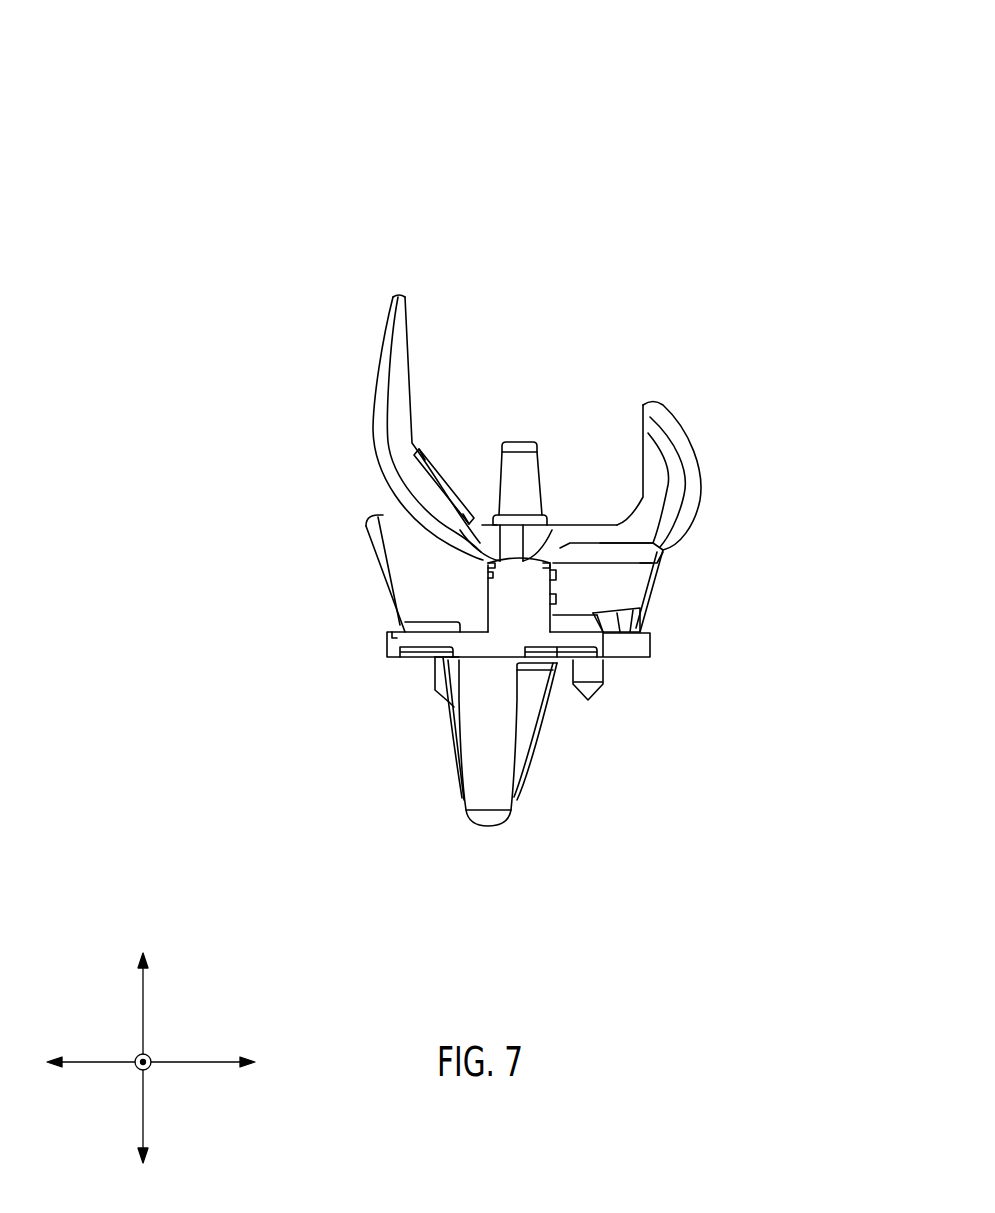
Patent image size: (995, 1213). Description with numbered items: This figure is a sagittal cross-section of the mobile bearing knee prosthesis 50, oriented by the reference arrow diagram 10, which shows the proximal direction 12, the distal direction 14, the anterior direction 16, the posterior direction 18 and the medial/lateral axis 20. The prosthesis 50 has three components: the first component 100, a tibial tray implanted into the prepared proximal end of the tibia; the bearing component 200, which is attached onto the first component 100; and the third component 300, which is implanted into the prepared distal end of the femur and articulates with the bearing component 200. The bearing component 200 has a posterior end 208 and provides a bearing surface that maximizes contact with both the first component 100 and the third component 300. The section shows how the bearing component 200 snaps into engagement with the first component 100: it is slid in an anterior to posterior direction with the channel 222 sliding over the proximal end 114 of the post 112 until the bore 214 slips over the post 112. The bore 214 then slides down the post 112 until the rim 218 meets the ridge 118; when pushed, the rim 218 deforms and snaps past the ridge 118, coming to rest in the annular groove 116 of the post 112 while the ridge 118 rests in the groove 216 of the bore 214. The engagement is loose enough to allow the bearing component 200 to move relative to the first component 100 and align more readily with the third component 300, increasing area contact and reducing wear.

The mobile bearing knee prosthesis 50 is at (502, 188).
The first component 100 is at (398, 745).
The post 112 is at (502, 608).
The proximal end of the post 114 is at (530, 561).
The annular groove 116 is at (488, 577).
The ridge 118 is at (490, 567).
The bearing component 200 is at (705, 590).
The posterior end 208 is at (647, 543).
The bore 214 is at (597, 613).
The groove of the bore 216 is at (657, 563).
The rim 218 is at (553, 575).
The channel 222 is at (553, 598).
The third component 300 is at (722, 420).
The reference arrow diagram 10 is at (110, 932).
The proximal direction 12 is at (145, 1007).
The distal direction 14 is at (148, 1113).
The anterior direction 16 is at (102, 1057).
The posterior direction 18 is at (202, 1063).
The medial/lateral axis 20 is at (150, 1057).